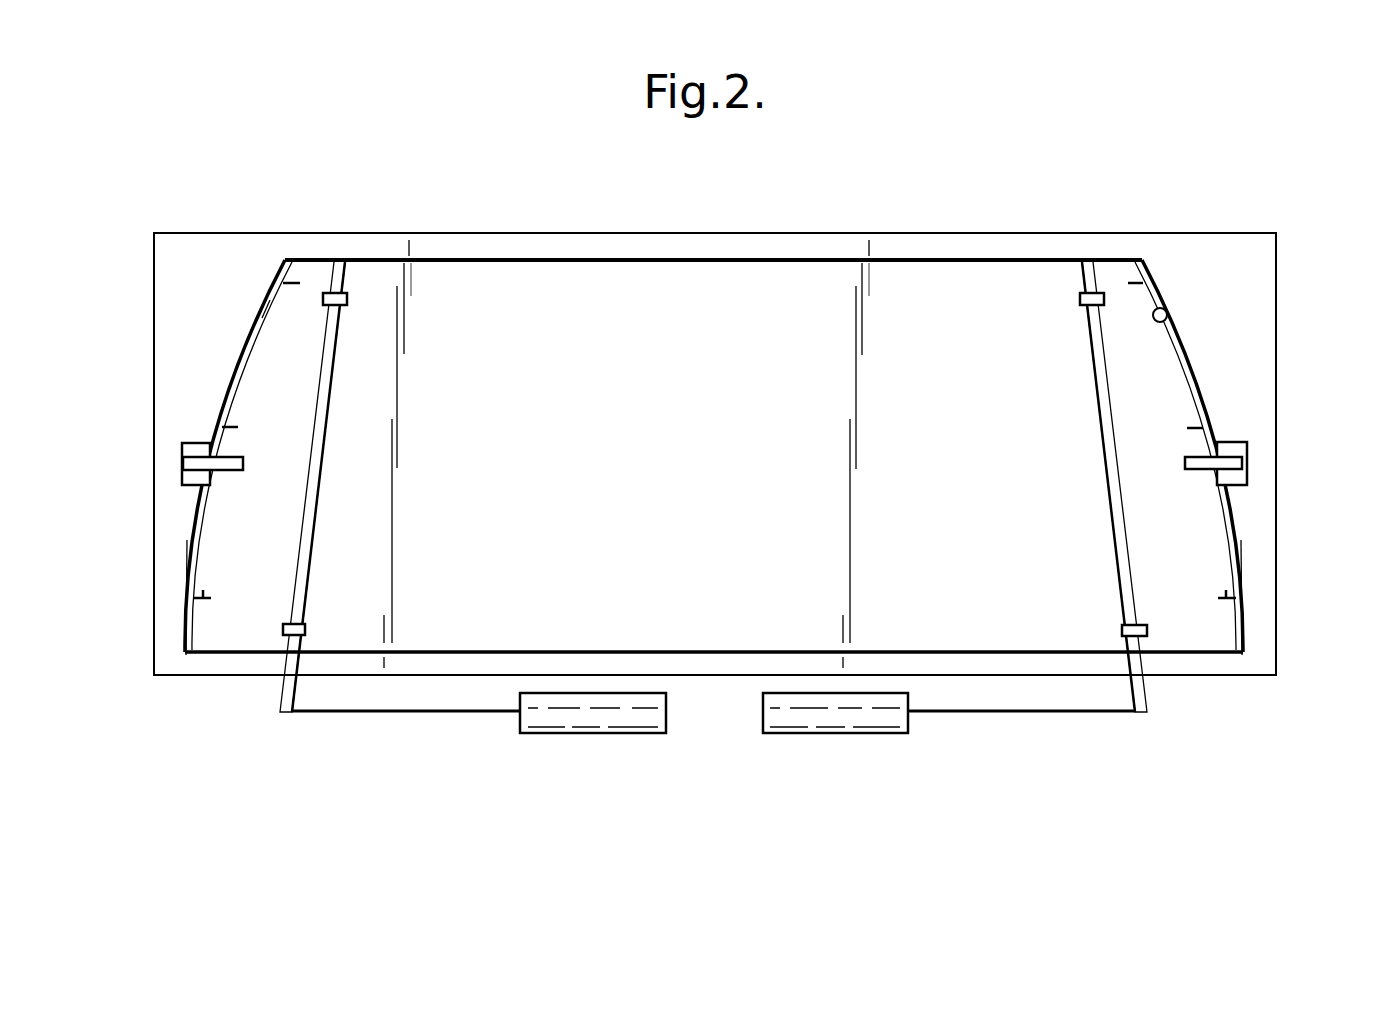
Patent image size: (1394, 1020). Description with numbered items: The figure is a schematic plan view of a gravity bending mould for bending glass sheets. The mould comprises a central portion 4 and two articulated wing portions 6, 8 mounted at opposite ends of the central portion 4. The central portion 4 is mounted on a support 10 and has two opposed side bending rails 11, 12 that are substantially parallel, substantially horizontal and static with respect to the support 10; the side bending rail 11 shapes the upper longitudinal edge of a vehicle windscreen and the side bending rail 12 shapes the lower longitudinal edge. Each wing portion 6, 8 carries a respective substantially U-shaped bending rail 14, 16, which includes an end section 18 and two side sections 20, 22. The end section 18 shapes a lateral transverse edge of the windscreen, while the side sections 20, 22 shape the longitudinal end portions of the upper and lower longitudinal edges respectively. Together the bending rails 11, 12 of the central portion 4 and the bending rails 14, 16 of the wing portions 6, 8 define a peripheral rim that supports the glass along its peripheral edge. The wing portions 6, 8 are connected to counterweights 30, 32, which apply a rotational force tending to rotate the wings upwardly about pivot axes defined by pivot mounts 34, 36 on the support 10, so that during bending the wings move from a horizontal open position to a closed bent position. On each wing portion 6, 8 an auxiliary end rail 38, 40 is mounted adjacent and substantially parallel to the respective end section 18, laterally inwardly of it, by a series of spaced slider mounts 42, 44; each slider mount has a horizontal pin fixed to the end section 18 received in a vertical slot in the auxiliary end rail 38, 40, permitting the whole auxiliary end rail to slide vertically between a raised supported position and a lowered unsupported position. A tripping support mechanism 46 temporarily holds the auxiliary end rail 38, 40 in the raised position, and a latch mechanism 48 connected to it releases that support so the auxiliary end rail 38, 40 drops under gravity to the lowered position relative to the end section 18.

The central portion 4 is at (851, 260).
The wing portion 6 is at (184, 578).
The wing portion 8 is at (1244, 566).
The support 10 is at (470, 233).
The side bending rail 11 is at (735, 260).
The side bending rail 12 is at (718, 652).
The bending rail 14 is at (238, 350).
The bending rail 16 is at (1194, 360).
The end section 18 is at (594, 260).
The side section 20 is at (318, 260).
The side section 22 is at (212, 655).
The counterweight 30 is at (600, 733).
The counterweight 32 is at (853, 733).
The pivot mount 34 is at (347, 300).
The pivot mount 36 is at (287, 629).
The auxiliary end rail 38 is at (280, 325).
The auxiliary end rail 40 is at (1163, 308).
The slider mount 42 is at (203, 596).
The slider mount 44 is at (1232, 604).
The tripping support mechanism 46 is at (232, 470).
The latch mechanism 48 is at (186, 462).